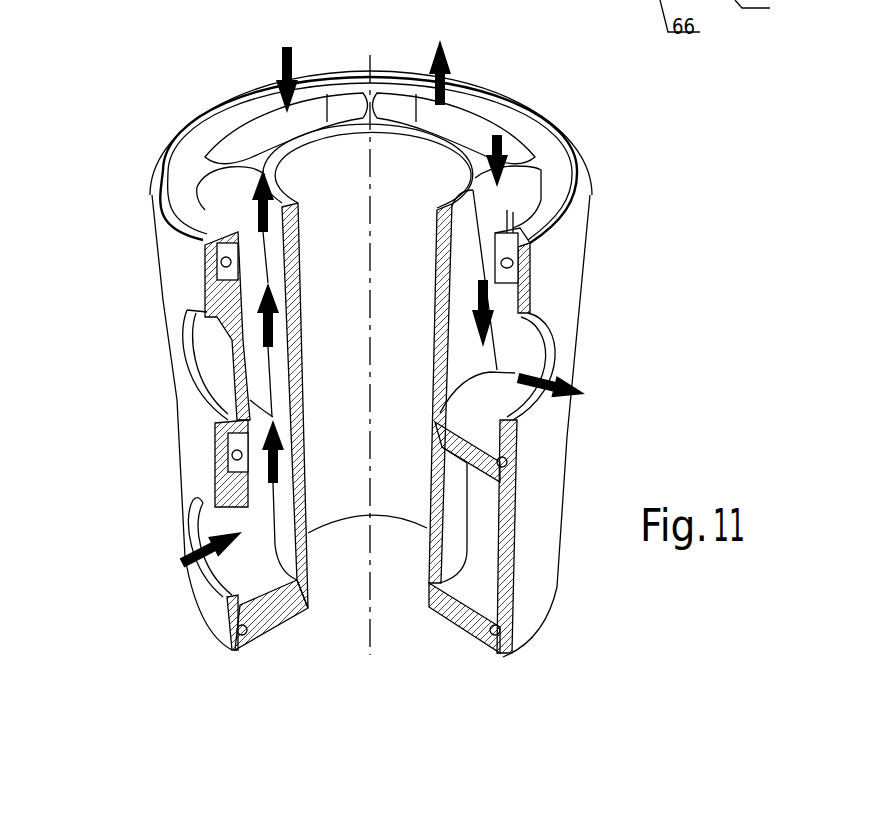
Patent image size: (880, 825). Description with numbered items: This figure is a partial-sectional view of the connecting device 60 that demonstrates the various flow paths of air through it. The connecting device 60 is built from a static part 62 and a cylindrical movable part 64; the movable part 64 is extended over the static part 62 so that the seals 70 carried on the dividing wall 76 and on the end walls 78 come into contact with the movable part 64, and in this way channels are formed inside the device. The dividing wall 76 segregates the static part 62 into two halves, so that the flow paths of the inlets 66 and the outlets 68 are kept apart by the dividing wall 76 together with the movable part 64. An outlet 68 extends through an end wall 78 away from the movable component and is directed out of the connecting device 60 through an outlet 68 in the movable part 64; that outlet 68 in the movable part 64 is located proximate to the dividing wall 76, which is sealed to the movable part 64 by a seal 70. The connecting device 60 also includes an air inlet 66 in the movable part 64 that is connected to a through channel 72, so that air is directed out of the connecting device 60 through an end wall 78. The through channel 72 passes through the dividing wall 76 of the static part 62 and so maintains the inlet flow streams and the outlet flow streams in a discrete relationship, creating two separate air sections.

The connecting device 60 is at (132, 78).
The static part 62 is at (360, 90).
The movable part 64 is at (537, 612).
The inlets 66 is at (203, 182).
The outlets 68 is at (263, 113).
The seal 70 is at (513, 265).
The through channel 72 is at (220, 380).
The dividing wall 76 is at (483, 445).
The end walls 78 is at (193, 213).